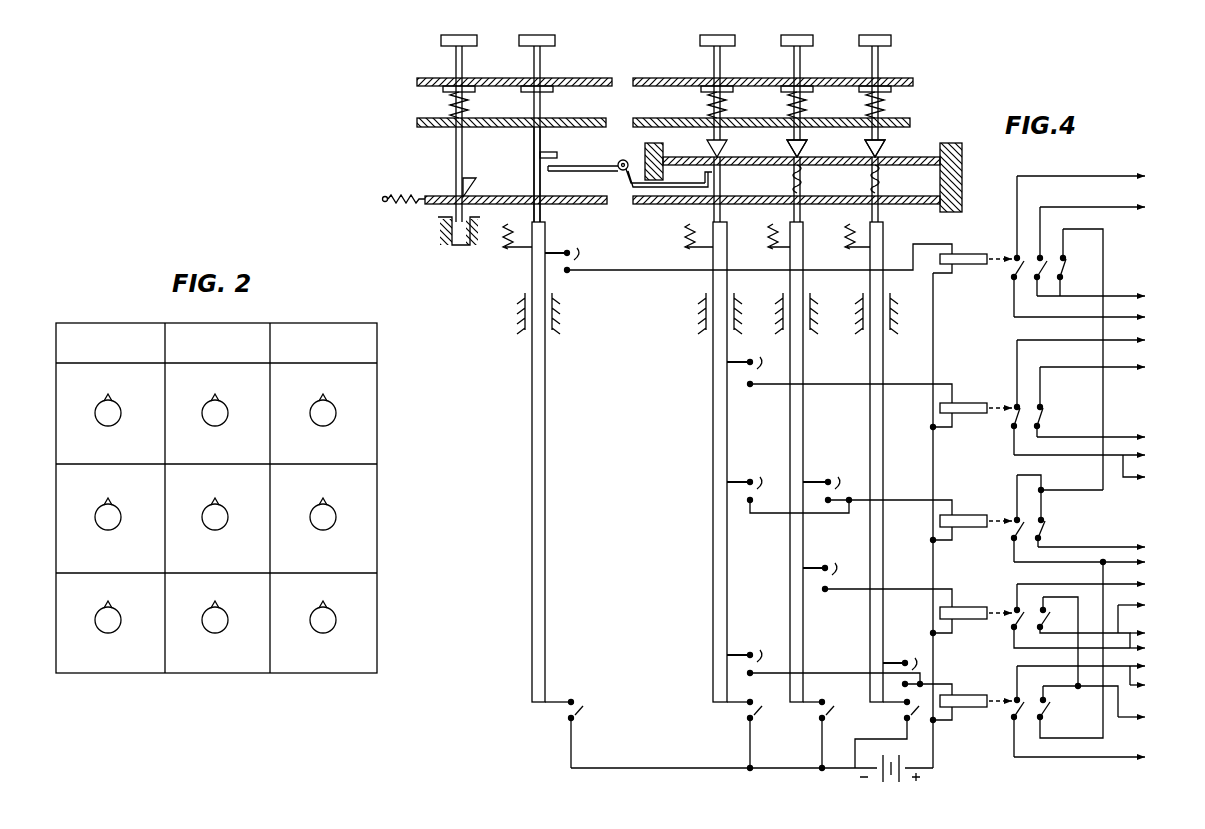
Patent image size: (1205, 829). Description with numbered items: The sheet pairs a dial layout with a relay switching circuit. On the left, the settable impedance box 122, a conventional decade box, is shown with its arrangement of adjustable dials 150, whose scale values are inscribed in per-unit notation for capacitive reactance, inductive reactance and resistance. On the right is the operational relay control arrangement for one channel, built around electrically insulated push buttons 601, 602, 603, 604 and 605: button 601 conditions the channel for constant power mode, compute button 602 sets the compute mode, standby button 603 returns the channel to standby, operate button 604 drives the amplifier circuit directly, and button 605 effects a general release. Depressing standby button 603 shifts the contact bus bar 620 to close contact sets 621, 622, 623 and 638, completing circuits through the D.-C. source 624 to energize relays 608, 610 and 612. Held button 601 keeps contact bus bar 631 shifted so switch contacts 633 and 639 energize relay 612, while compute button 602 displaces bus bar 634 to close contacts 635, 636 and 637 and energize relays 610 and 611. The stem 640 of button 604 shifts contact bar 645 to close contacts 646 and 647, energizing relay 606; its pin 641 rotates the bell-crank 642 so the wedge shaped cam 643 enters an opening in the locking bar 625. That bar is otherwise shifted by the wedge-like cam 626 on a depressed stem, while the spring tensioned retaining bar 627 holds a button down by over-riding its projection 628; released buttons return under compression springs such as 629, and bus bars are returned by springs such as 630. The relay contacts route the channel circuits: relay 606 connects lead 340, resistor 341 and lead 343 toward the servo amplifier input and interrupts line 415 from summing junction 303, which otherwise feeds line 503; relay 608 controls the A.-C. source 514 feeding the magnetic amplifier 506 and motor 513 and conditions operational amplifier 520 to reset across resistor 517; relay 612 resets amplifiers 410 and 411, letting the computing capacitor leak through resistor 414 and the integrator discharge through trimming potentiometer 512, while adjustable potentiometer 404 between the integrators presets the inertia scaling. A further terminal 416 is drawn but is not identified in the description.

In FIG. 2, the settable impedance box 122 is at (382, 421).
In FIG. 2, the adjustable dial 150 is at (330, 518).
In FIG. 4, the push button 601 is at (875, 36).
In FIG. 4, the compute button 602 is at (797, 36).
In FIG. 4, the standby button 603 is at (717, 36).
In FIG. 4, the amplifier operate button 604 is at (538, 36).
In FIG. 4, the release button 605 is at (460, 36).
In FIG. 4, the relay 606 is at (972, 266).
In FIG. 4, the relay 608 is at (973, 415).
In FIG. 4, the relay 610 is at (975, 528).
In FIG. 4, the relay 611 is at (972, 620).
In FIG. 4, the relay 612 is at (973, 708).
In FIG. 4, the contact bus bar 620 is at (712, 429).
In FIG. 4, the contact set 621 is at (752, 363).
In FIG. 4, the contact set 622 is at (752, 481).
In FIG. 4, the contact set 623 is at (751, 654).
In FIG. 4, the D.-C. source 624 is at (880, 784).
In FIG. 4, the locking bar 625 is at (905, 157).
In FIG. 4, the wedge-like cam 626 is at (866, 150).
In FIG. 4, the button retaining bar 627 is at (645, 206).
In FIG. 4, the projection 628 is at (872, 184).
In FIG. 4, the compression spring 629 is at (868, 105).
In FIG. 4, the spring 630 is at (685, 238).
In FIG. 4, the contact bus bar 631 is at (869, 429).
In FIG. 4, the switch contact 633 is at (902, 664).
In FIG. 4, the contact bus bar 634 is at (790, 429).
In FIG. 4, the contact 635 is at (828, 481).
In FIG. 4, the contact 636 is at (827, 569).
In FIG. 4, the contact 637 is at (818, 712).
In FIG. 4, the contact set 638 is at (745, 712).
In FIG. 4, the switch contact 639 is at (903, 710).
In FIG. 4, the stem 640 is at (533, 173).
In FIG. 4, the pin 641 is at (560, 152).
In FIG. 4, the bell-crank 642 is at (615, 173).
In FIG. 4, the wedge shaped cam 643 is at (712, 178).
In FIG. 4, the contact bar 645 is at (531, 429).
In FIG. 4, the contact 646 is at (575, 257).
In FIG. 4, the contact 647 is at (578, 712).
In FIG. 4, the lead 340 is at (1098, 176).
In FIG. 4, the lead 343 is at (1109, 207).
In FIG. 4, the line 503 is at (1108, 296).
In FIG. 4, the resistor 341 is at (1096, 317).
In FIG. 4, the A.-C. source 514 is at (1098, 340).
In FIG. 4, the operational amplifier 520 is at (1109, 367).
In FIG. 4, the resistor 517 is at (1108, 437).
In FIG. 4, the magnetic amplifier 506 is at (1096, 455).
In FIG. 4, the A.-C. motor 513 is at (1151, 470).
In FIG. 4, the line 415 is at (1121, 547).
In FIG. 4, the trimming potentiometer 512 is at (1096, 562).
In FIG. 4, the summing junction 303 is at (1098, 584).
In FIG. 4, the terminal 416 is at (1148, 605).
In FIG. 4, the resistor 414 is at (1096, 695).
In FIG. 4, the summing amplifier 410 is at (1098, 657).
In FIG. 4, the adjustable potentiometer 404 is at (1154, 685).
In FIG. 4, the summing amplifier 411 is at (1148, 717).